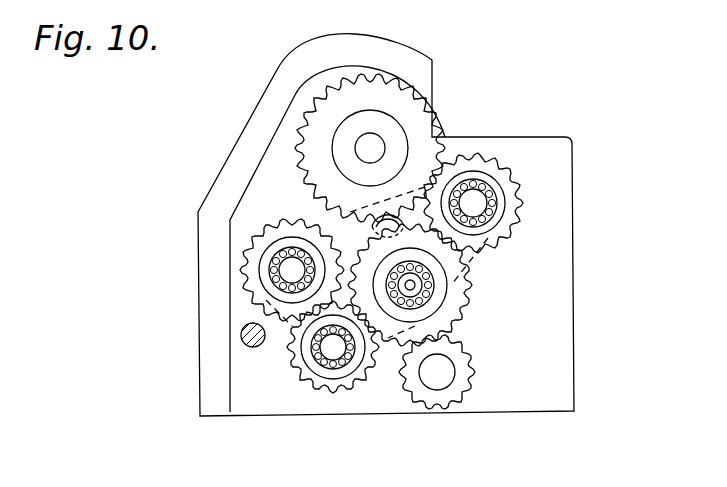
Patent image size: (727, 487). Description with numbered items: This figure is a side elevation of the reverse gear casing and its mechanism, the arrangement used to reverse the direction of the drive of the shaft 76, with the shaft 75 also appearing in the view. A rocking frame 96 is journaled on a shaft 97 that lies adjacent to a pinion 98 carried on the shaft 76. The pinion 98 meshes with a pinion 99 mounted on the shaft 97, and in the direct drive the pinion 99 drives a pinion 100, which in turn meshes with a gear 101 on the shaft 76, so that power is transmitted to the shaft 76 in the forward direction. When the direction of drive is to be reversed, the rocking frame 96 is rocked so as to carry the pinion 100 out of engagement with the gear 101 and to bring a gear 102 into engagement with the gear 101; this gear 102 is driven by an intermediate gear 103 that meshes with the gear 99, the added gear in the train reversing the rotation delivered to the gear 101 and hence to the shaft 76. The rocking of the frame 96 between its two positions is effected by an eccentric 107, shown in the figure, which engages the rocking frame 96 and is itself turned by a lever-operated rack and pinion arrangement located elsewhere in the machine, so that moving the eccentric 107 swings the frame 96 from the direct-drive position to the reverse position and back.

The shaft 75 is at (442, 373).
The shaft 76 is at (372, 140).
The rocking frame 96 is at (382, 348).
The shaft 97 is at (420, 287).
The pinion 98 is at (473, 357).
The pinion 99 is at (473, 280).
The pinion 100 is at (510, 185).
The gear 101 is at (413, 138).
The gear 102 is at (257, 273).
The intermediate gear 103 is at (293, 357).
The eccentric 107 is at (373, 224).